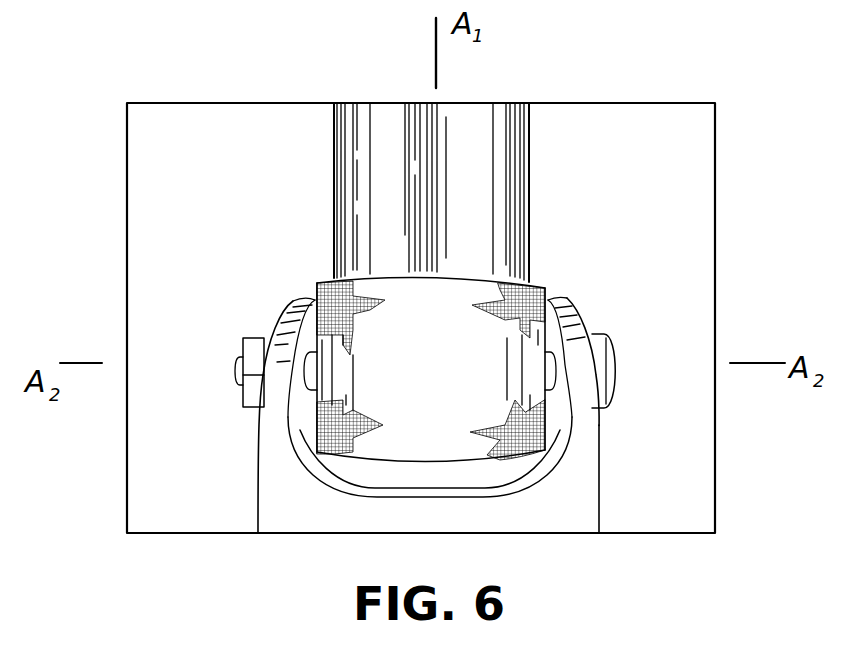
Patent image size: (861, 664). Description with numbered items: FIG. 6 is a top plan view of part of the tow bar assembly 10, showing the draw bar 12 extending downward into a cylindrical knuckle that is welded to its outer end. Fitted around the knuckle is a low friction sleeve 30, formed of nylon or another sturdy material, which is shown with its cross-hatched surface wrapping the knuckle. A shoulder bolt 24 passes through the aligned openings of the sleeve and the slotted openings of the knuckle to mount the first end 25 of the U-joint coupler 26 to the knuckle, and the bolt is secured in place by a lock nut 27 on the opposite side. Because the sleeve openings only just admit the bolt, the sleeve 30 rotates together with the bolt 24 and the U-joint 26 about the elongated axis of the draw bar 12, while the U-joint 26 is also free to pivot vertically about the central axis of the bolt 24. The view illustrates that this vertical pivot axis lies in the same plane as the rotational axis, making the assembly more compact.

The tow bar assembly 10 is at (262, 292).
The draw bar 12 is at (510, 198).
The shoulder bolt 24 is at (610, 358).
The first end 25 is at (587, 408).
The U-joint coupler 26 is at (603, 516).
The lock nut 27 is at (248, 398).
The low friction sleeve 30 is at (530, 280).